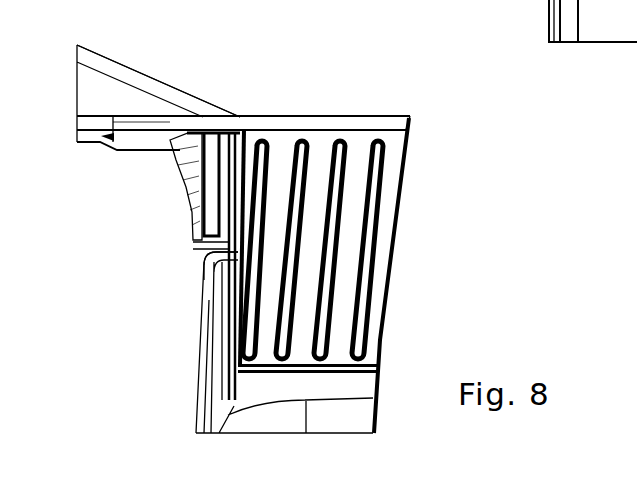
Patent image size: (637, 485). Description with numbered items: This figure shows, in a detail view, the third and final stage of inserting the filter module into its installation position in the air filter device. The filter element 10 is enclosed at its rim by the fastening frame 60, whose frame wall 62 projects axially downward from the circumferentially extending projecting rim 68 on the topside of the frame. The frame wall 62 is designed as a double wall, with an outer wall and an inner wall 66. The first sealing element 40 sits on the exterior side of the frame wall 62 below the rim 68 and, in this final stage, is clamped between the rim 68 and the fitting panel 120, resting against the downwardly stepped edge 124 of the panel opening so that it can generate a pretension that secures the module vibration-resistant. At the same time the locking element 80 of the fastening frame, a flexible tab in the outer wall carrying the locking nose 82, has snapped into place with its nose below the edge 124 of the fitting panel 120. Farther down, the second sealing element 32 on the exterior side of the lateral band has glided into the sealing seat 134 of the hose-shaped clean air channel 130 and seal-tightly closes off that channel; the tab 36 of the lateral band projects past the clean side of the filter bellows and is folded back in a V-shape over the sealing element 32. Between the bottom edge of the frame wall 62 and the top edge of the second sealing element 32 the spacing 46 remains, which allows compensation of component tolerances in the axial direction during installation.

The filter element 10 is at (398, 190).
The second sealing element 32 is at (228, 275).
The tab 36 is at (222, 318).
The first sealing element 40 is at (147, 133).
The spacing 46 is at (191, 244).
The fastening frame 60 is at (327, 113).
The frame wall 62 is at (240, 185).
The inner wall 66 is at (240, 185).
The rim 68 is at (197, 116).
The locking element 80 is at (173, 167).
The locking nose 82 is at (173, 167).
The fitting panel 120 is at (142, 150).
The edge 124 is at (182, 152).
The clean air channel 130 is at (203, 366).
The sealing seat 134 is at (190, 255).